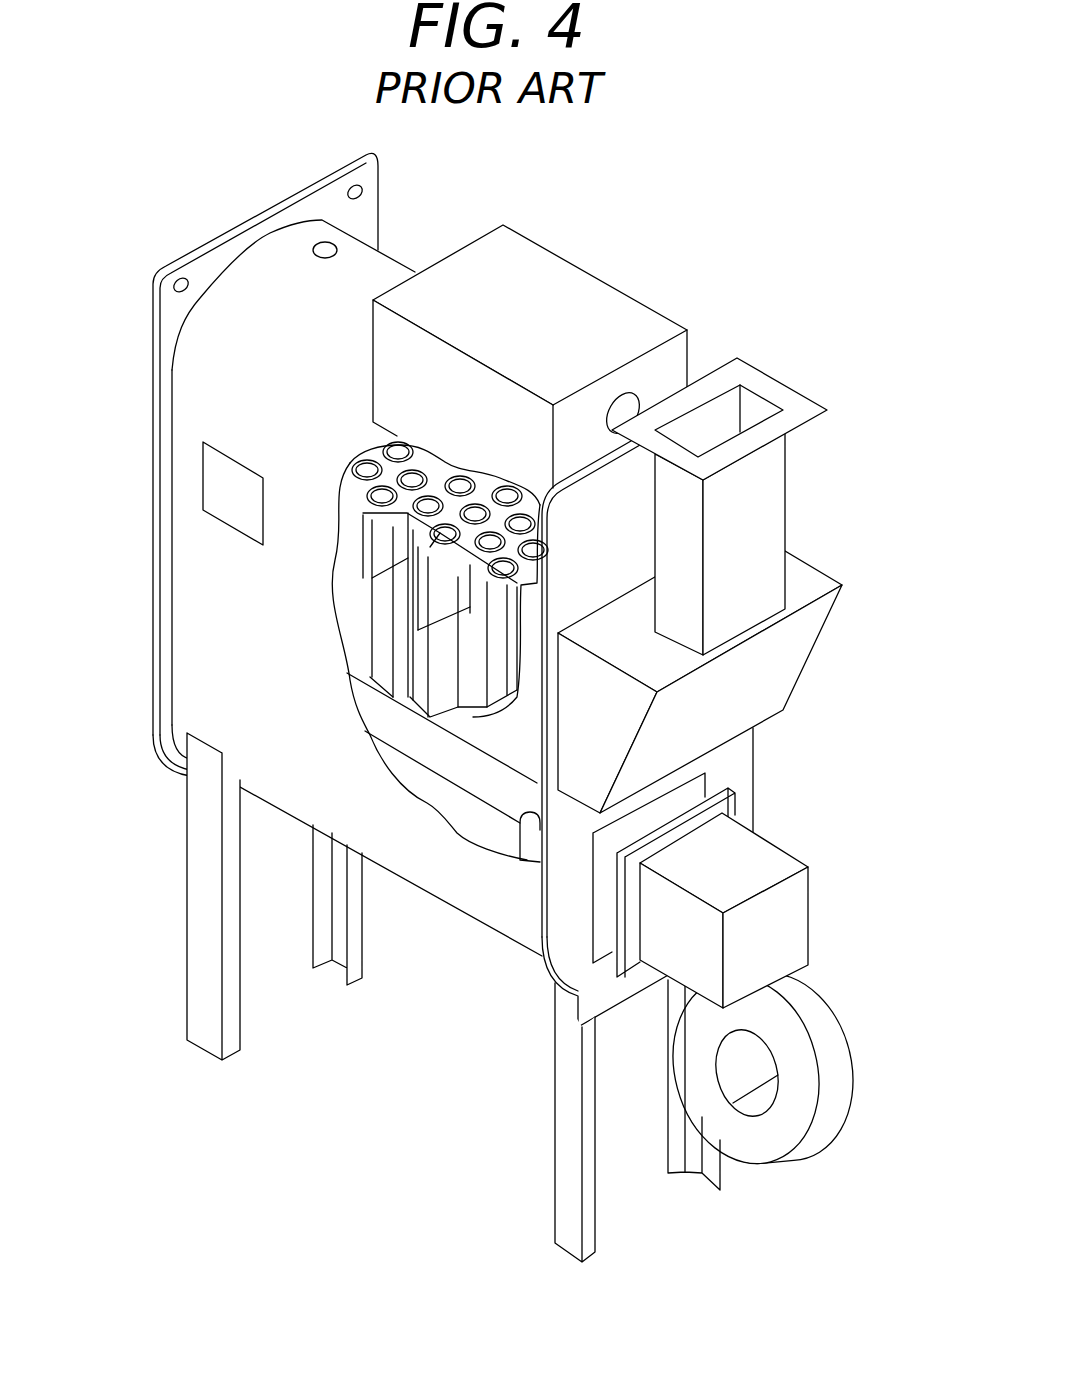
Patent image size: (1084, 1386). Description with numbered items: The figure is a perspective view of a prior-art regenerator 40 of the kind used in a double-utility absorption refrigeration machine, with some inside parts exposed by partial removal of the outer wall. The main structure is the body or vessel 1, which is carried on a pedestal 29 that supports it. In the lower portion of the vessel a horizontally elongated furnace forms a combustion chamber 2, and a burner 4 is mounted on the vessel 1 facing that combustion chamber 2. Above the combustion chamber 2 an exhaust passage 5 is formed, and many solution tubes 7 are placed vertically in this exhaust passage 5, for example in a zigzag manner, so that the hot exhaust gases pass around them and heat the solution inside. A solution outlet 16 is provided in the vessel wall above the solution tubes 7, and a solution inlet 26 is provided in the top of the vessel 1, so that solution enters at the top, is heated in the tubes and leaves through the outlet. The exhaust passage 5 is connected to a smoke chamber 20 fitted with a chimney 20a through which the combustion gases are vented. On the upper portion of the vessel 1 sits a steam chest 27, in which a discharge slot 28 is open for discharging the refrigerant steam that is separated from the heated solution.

The regenerator 40 is at (163, 230).
The body (vessel) 1 is at (203, 687).
The combustion chamber 2 is at (535, 857).
The burner 4 is at (790, 928).
The exhaust passage 5 is at (357, 610).
The solution tubes 7 is at (332, 455).
The solution outlet 16 is at (212, 480).
The smoke chamber 20 is at (813, 578).
The chimney 20a is at (758, 522).
The solution inlet 26 is at (320, 242).
The steam chest 27 is at (557, 290).
The discharge slot 28 is at (633, 404).
The pedestal 29 is at (202, 852).